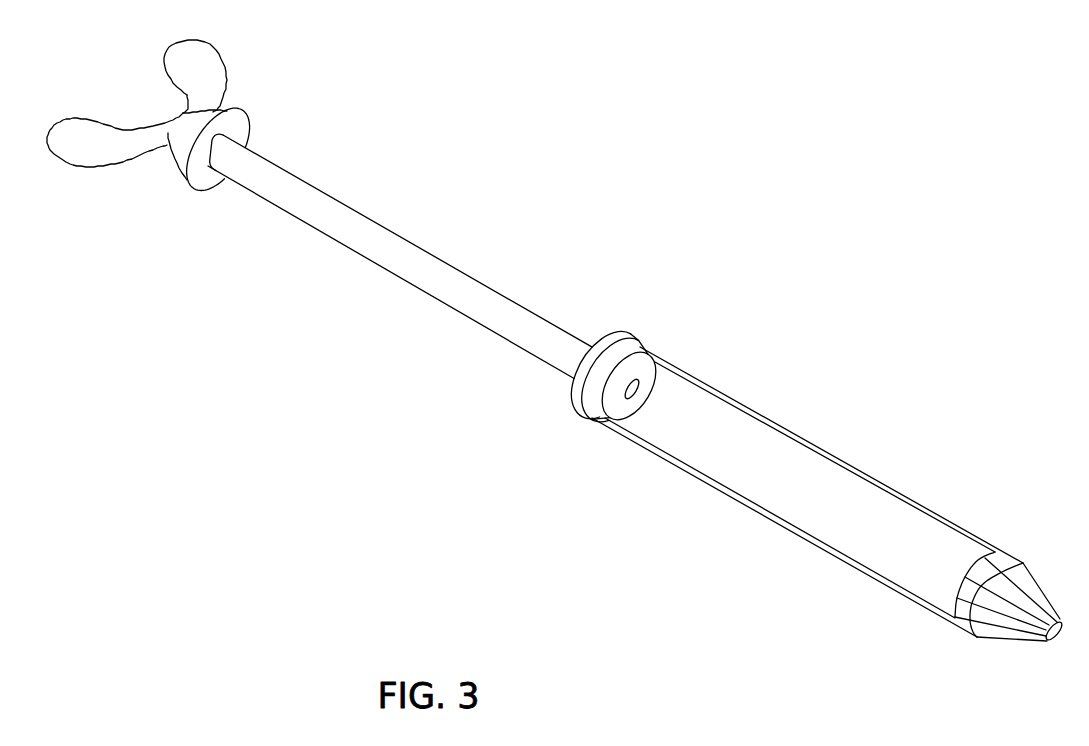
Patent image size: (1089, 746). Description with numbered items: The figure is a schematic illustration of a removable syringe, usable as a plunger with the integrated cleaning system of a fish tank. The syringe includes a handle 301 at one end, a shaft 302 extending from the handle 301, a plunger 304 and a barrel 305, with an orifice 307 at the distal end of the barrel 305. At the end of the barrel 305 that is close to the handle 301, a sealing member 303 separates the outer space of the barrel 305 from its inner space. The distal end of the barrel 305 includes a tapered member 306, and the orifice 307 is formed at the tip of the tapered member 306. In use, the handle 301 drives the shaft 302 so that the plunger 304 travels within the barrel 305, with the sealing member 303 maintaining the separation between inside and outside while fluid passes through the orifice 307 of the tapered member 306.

The handle 301 is at (67, 130).
The shaft 302 is at (365, 257).
The sealing member 303 is at (567, 395).
The plunger 304 is at (637, 390).
The barrel 305 is at (792, 536).
The tapered member 306 is at (1033, 579).
The orifice 307 is at (1052, 640).